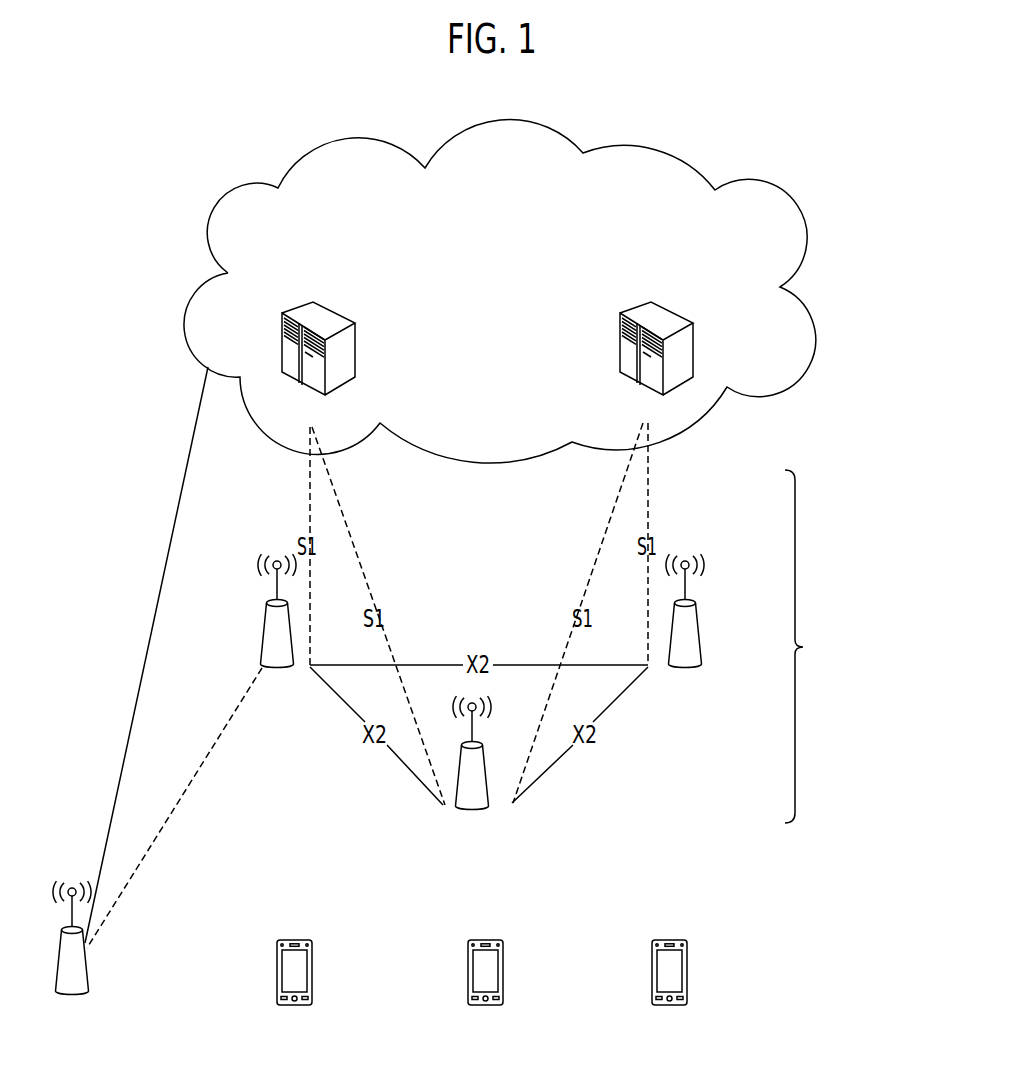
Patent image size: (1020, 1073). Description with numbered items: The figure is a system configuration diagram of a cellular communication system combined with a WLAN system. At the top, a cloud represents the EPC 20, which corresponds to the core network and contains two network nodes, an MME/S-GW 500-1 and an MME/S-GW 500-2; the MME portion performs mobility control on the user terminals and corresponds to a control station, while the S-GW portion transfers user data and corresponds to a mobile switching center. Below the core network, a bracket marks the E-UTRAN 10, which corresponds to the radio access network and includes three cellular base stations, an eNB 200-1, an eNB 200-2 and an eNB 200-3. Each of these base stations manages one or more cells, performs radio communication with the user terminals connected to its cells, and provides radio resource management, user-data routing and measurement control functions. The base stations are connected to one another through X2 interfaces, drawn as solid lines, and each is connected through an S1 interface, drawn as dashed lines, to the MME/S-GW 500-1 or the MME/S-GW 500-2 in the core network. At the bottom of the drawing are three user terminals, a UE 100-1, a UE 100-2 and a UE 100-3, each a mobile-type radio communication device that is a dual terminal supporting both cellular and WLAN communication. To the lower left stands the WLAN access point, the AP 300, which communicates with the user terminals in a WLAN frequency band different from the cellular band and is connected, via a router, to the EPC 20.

The E-UTRAN 10 is at (836, 646).
The EPC 20 is at (697, 160).
The UE 100-1 is at (297, 938).
The UE 100-2 is at (488, 938).
The UE 100-3 is at (672, 938).
The eNB 200-1 is at (262, 632).
The eNB 200-2 is at (488, 783).
The eNB 200-3 is at (697, 615).
The AP 300 is at (88, 967).
The MME/S-GW 500-1 is at (340, 314).
The MME/S-GW 500-2 is at (697, 290).